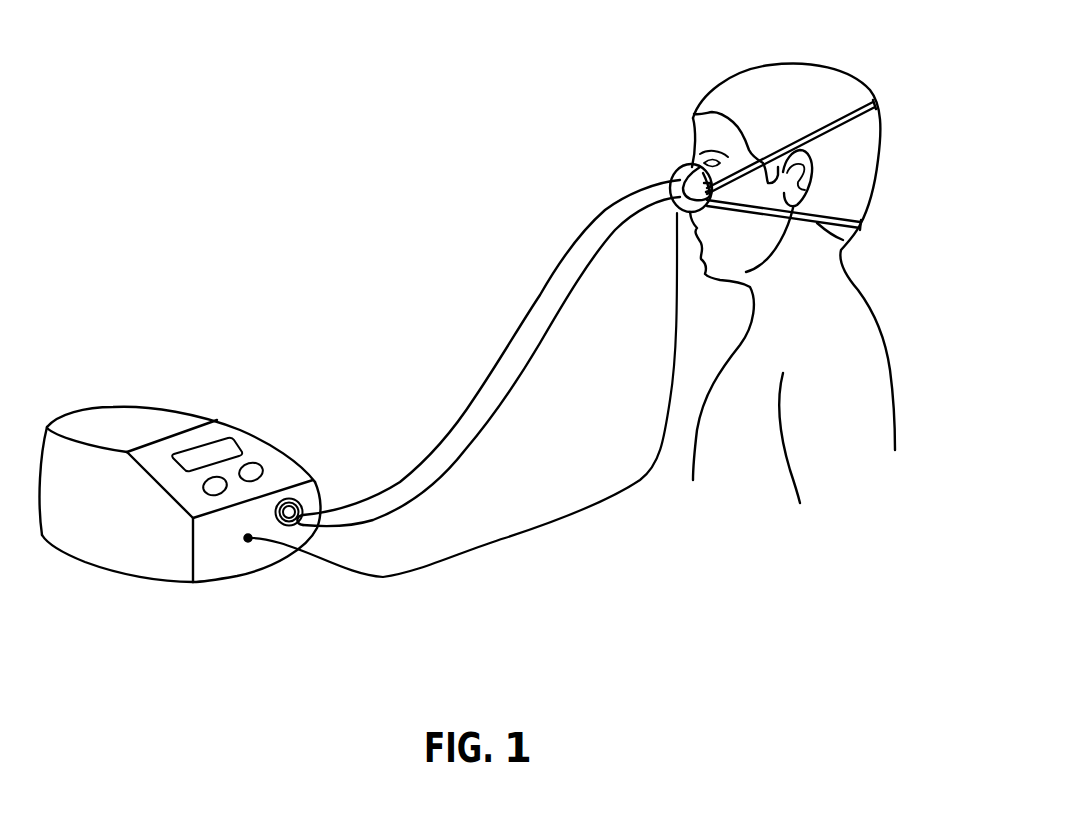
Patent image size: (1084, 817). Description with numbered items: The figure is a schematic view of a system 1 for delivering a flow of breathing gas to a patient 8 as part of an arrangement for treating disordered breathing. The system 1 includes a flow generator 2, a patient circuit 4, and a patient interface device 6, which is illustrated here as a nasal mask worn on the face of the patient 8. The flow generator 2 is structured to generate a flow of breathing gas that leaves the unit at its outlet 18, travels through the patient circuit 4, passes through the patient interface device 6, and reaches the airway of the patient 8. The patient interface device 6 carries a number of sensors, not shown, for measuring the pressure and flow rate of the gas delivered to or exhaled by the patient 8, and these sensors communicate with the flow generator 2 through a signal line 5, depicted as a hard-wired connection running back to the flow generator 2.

The system 1 is at (268, 179).
The flow generator 2 is at (136, 418).
The patient circuit 4 is at (483, 398).
The signal line 5 is at (676, 222).
The patient interface device 6 is at (673, 177).
The patient 8 is at (725, 88).
The outlet 18 is at (311, 500).